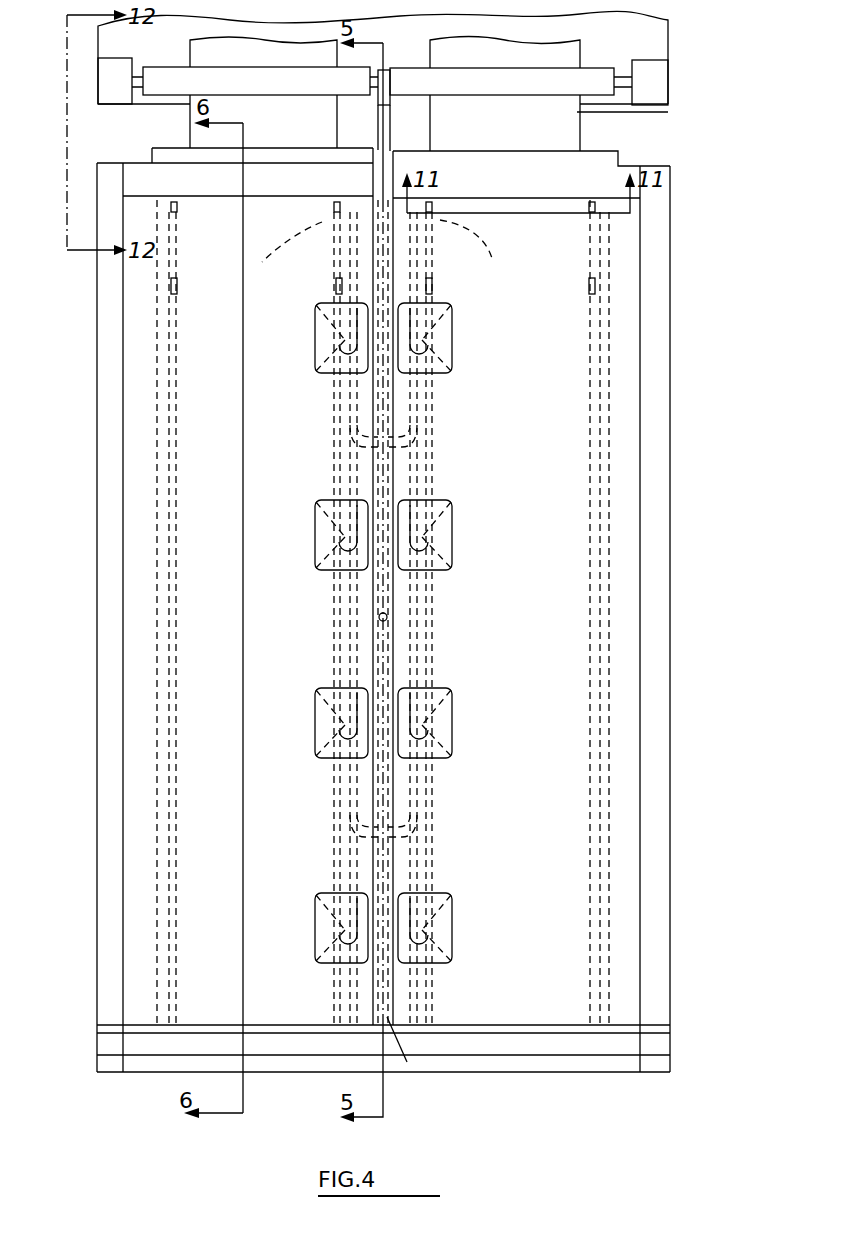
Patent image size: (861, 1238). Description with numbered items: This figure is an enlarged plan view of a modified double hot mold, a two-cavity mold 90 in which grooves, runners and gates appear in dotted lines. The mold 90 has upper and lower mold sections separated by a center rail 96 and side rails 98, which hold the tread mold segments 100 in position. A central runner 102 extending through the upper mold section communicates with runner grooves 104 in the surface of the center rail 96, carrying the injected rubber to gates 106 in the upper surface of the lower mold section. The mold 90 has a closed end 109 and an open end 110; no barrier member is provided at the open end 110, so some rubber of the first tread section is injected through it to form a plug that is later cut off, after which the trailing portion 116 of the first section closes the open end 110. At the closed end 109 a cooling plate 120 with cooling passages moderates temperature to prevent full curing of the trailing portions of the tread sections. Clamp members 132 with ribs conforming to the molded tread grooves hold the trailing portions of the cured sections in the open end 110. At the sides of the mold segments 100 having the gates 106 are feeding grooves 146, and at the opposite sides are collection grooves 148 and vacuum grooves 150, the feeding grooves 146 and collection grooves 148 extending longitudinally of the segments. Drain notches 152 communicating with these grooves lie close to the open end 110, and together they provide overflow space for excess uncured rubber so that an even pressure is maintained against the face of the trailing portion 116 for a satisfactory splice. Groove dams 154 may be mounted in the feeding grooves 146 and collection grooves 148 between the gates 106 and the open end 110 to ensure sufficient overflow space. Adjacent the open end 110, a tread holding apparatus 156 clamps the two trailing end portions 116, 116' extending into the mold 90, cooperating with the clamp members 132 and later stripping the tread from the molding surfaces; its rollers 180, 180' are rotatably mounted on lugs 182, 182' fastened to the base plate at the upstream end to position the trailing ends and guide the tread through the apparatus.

The two-cavity mold 90 is at (657, 224).
The center rail 96 is at (407, 1060).
The side rails 98 is at (103, 312).
The tread mold segments 100 is at (135, 893).
The central runner 102 is at (389, 617).
The runner grooves 104 is at (415, 446).
The gates 106 is at (330, 343).
The closed end 109 is at (587, 1065).
The open end 110 is at (617, 175).
The trailing portion 116 is at (629, 123).
The trailing end portion 116' is at (156, 121).
The cooling plate 120 is at (505, 1063).
The clamp members 132 is at (137, 172).
The feeding grooves 146 is at (384, 253).
The collection grooves 148 is at (176, 447).
The vacuum grooves 150 is at (157, 490).
The drain notches 152 is at (334, 206).
The groove dams 154 is at (177, 286).
The tread holding apparatus 156 is at (678, 36).
The rollers 180 is at (517, 61).
The rollers 180' is at (258, 62).
The lugs 182 is at (560, 65).
The lugs 182' is at (108, 96).